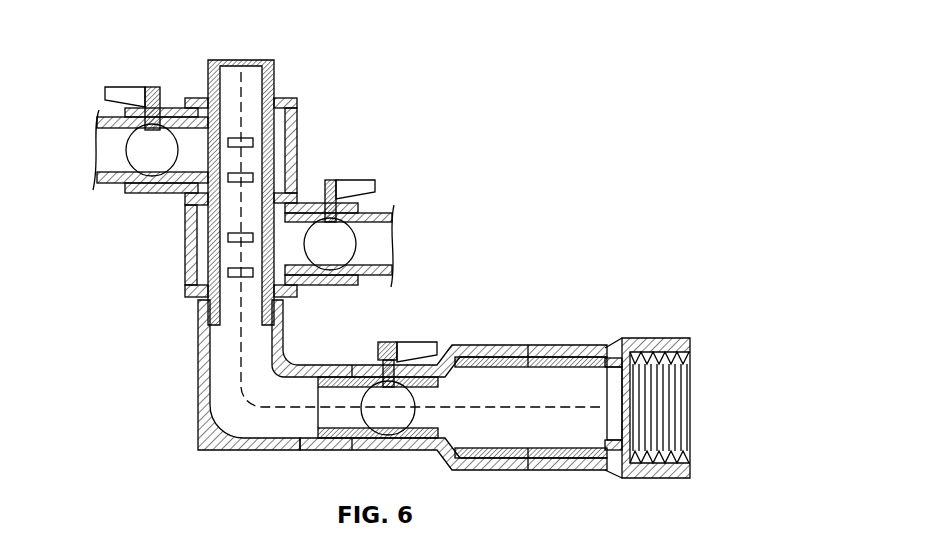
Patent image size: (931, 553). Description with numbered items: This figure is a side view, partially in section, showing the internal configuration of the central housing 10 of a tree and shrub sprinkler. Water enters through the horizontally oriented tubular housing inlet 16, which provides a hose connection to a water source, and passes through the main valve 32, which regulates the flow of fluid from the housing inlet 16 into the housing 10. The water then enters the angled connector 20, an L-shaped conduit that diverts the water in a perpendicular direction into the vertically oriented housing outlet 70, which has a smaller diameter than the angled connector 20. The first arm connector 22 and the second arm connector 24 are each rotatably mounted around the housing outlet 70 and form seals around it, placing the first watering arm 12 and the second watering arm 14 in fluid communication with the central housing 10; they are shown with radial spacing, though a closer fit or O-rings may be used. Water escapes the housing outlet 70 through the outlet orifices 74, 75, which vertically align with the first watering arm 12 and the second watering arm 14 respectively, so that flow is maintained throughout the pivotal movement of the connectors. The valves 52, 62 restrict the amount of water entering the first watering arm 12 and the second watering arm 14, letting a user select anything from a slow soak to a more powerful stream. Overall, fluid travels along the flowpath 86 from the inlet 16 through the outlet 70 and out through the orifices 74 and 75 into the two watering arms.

The central housing 10 is at (609, 37).
The first watering arm 12 is at (101, 187).
The second watering arm 14 is at (380, 272).
The housing inlet 16 is at (673, 342).
The angled connector 20 is at (258, 378).
The first arm connector 22 is at (290, 142).
The second arm connector 24 is at (188, 278).
The main valve 32 is at (412, 346).
The valve 52 is at (128, 86).
The valve 62 is at (354, 179).
The housing outlet 70 is at (257, 85).
The outlet orifice 74 is at (228, 143).
The outlet orifice 75 is at (228, 238).
The flowpath 86 is at (235, 365).